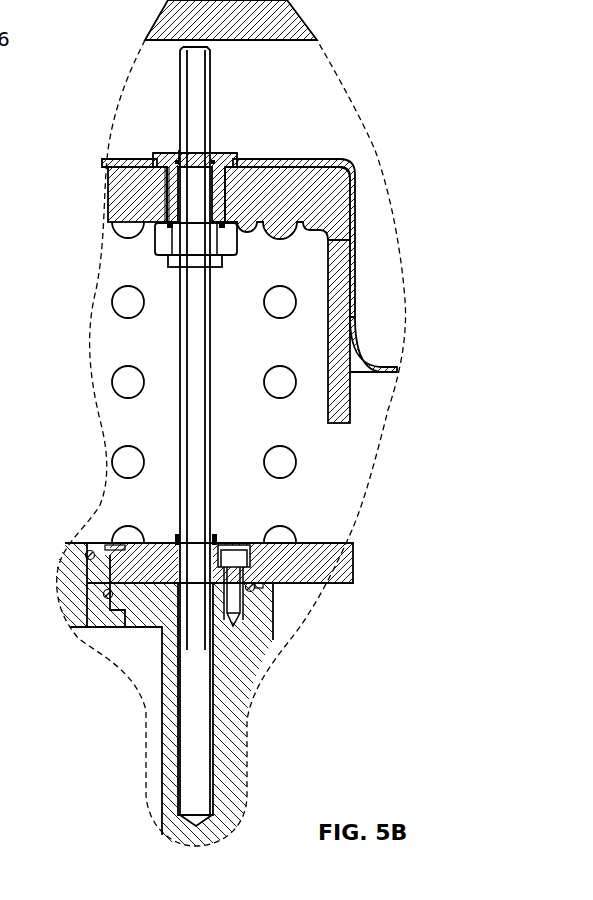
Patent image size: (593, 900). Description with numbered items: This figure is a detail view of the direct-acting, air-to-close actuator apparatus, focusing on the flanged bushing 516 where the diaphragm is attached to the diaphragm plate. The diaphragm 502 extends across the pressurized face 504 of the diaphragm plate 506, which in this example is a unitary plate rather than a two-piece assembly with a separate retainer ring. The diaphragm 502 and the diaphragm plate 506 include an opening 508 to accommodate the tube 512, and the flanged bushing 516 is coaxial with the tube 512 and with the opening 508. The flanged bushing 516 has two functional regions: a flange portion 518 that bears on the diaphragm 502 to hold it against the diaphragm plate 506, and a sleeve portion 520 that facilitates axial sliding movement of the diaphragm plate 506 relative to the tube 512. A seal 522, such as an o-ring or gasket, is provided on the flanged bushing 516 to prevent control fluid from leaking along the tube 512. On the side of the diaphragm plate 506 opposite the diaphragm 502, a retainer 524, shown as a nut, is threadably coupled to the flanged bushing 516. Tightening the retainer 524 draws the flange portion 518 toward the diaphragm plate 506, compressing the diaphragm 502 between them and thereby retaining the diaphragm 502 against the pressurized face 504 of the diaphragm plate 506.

The diaphragm 502 is at (381, 363).
The pressurized face 504 is at (336, 160).
The diaphragm plate 506 is at (345, 410).
The opening 508 is at (175, 192).
The tube 512 is at (200, 86).
The flanged bushing 516 is at (222, 152).
The flange portion 518 is at (236, 160).
The sleeve portion 520 is at (167, 177).
The seal 522 is at (179, 150).
The retainer 524 is at (163, 242).